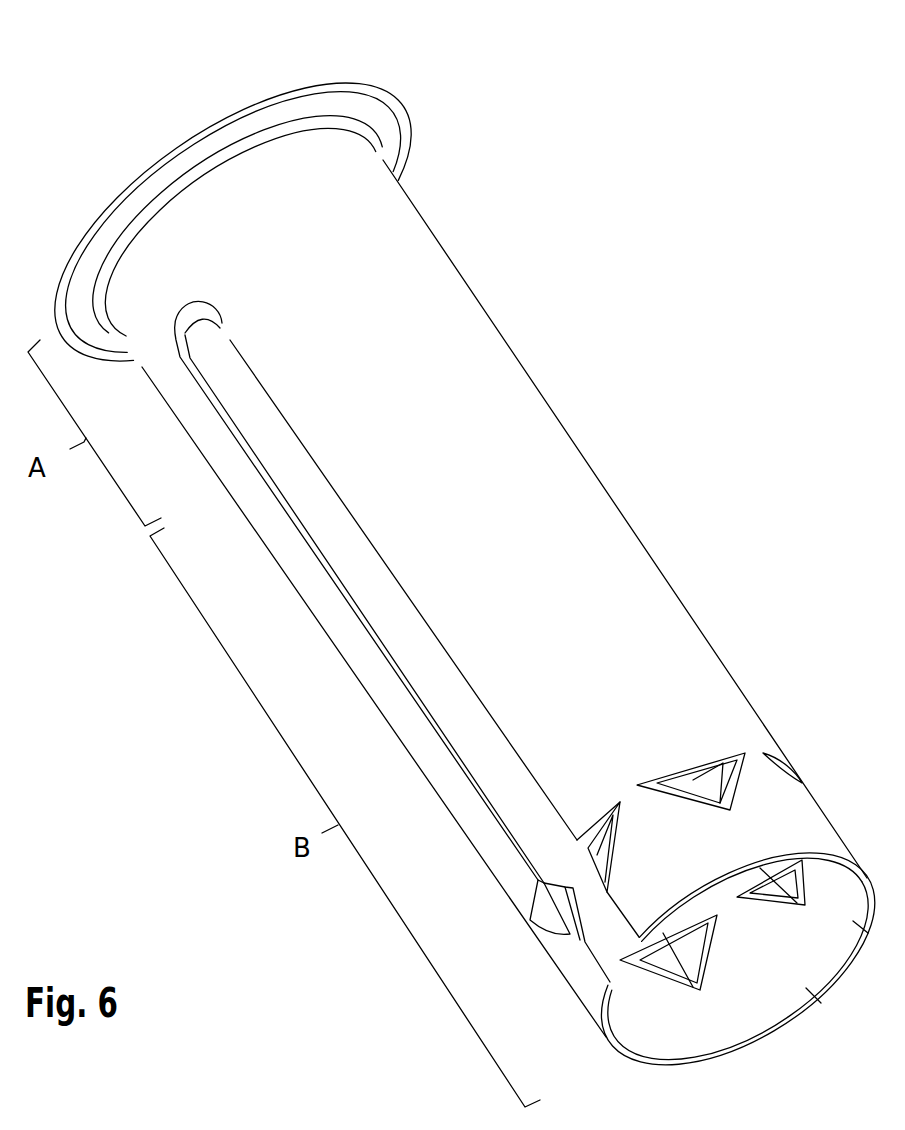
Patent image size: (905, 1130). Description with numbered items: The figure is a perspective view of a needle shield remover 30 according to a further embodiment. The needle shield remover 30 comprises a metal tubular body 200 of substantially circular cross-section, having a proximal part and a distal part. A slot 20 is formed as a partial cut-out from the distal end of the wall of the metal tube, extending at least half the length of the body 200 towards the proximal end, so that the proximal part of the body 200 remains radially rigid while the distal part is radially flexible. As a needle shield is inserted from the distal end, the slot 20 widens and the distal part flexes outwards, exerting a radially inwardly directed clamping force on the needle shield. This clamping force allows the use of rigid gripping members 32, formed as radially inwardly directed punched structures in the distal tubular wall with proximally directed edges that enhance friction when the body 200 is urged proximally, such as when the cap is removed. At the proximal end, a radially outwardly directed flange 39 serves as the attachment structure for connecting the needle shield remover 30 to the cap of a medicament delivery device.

The needle shield remover 30 is at (597, 412).
The radially outwardly directed flange 39 is at (165, 175).
The slot 20 is at (473, 730).
The rigid gripping members 32 is at (707, 777).
The metal tubular body 200 is at (455, 531).